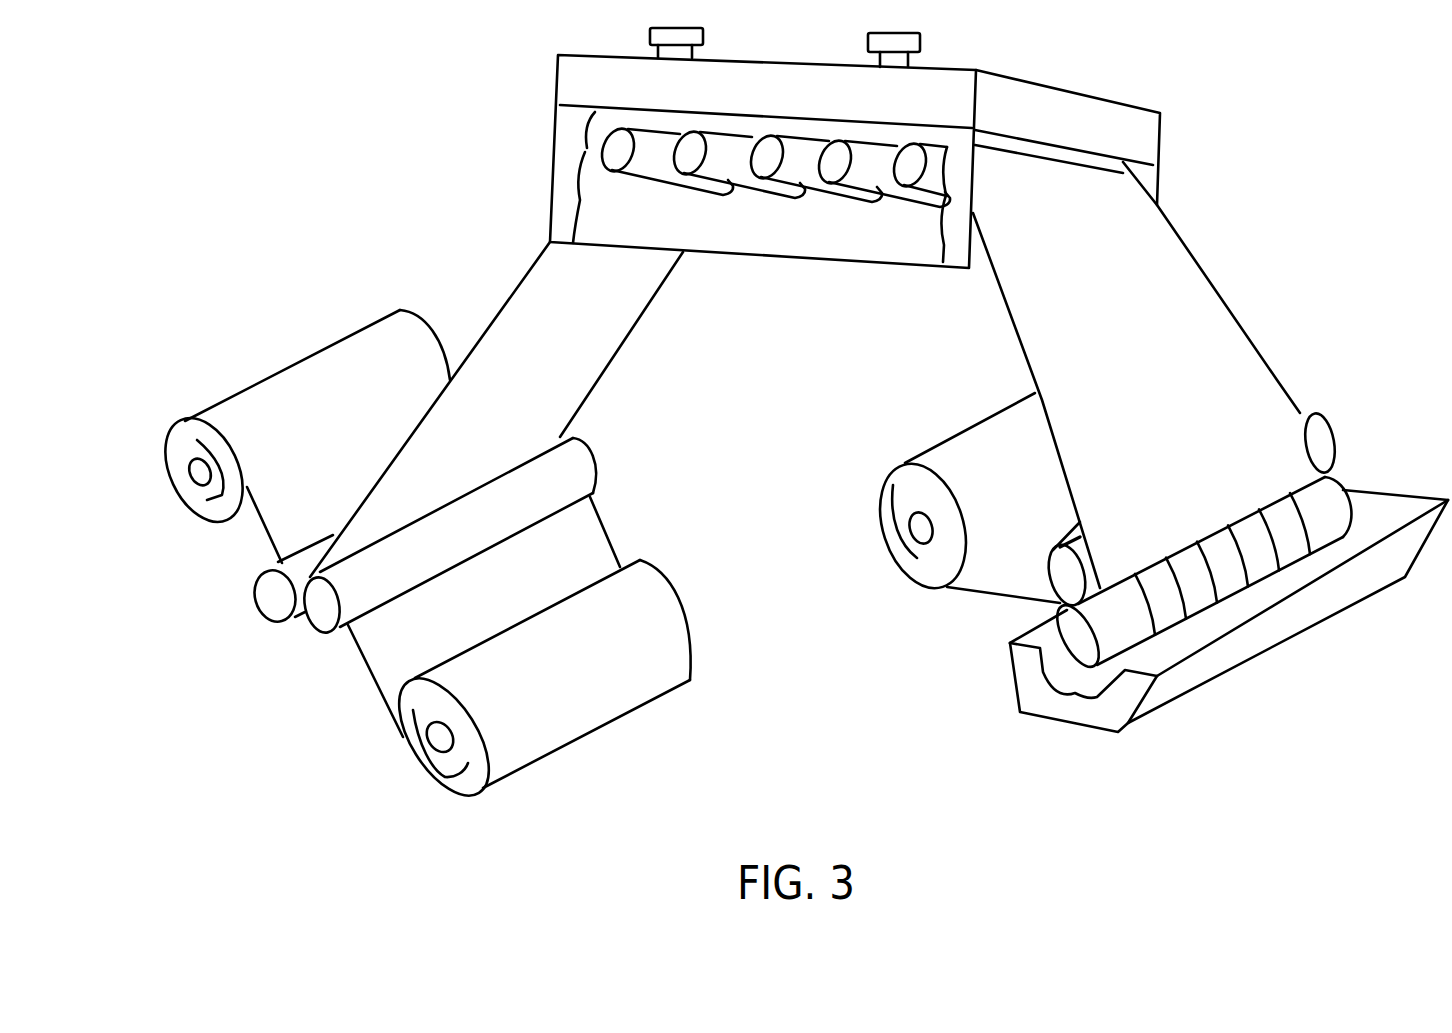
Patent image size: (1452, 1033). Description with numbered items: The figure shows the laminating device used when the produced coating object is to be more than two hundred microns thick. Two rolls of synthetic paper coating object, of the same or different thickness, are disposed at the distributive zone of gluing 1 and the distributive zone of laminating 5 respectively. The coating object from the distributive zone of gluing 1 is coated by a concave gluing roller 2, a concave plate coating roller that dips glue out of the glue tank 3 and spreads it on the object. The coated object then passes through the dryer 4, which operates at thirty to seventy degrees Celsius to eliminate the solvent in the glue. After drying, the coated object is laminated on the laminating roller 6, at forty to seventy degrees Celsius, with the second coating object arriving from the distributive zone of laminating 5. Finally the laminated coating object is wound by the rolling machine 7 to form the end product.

The distributive zone of gluing 1 is at (909, 451).
The concave gluing roller 2 is at (1340, 478).
The glue tank 3 is at (1051, 732).
The dryer 4 is at (745, 258).
The distributive zone of laminating 5 is at (265, 369).
The laminating roller 6 is at (602, 460).
The rolling machine 7 is at (662, 709).